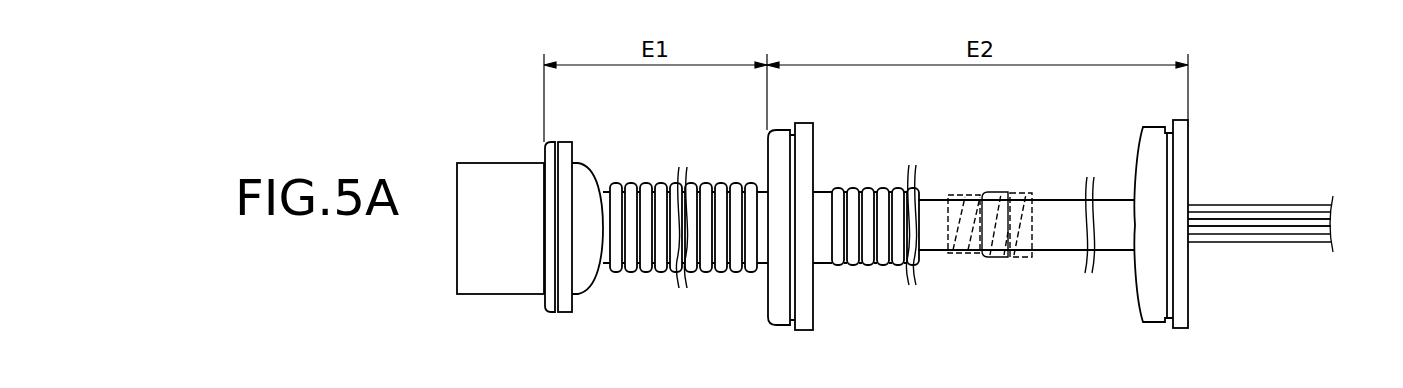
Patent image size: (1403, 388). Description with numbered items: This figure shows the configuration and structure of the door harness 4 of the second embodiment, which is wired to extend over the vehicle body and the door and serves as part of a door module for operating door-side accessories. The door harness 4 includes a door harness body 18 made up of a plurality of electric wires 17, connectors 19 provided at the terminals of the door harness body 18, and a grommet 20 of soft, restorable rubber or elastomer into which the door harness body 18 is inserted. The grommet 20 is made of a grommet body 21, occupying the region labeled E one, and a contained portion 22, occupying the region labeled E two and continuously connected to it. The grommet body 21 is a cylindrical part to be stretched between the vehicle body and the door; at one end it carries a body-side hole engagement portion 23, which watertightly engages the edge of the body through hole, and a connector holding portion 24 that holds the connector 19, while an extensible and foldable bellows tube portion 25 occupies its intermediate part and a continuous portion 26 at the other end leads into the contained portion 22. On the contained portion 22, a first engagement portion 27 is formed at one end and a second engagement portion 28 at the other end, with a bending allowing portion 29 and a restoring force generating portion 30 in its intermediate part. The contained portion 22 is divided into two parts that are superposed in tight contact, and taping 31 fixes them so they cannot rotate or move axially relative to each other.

The door harness 4 is at (1223, 136).
The electric wires 17 is at (1280, 243).
The door harness body 18 is at (1280, 205).
The connector 19 is at (490, 187).
The grommet 20 is at (853, 229).
The grommet body 21 is at (670, 230).
The contained portion 22 is at (974, 238).
The body-side hole engagement portion 23 is at (565, 312).
The connector holding portion 24 is at (548, 267).
The bellows tube portion 25 is at (648, 185).
The continuous portion 26 is at (762, 207).
The first engagement portion 27 is at (1147, 140).
The second engagement portion 28 is at (803, 128).
The bending allowing portion 29 is at (853, 188).
The restoring force generating portion 30 is at (1057, 200).
The taping 31 is at (973, 195).